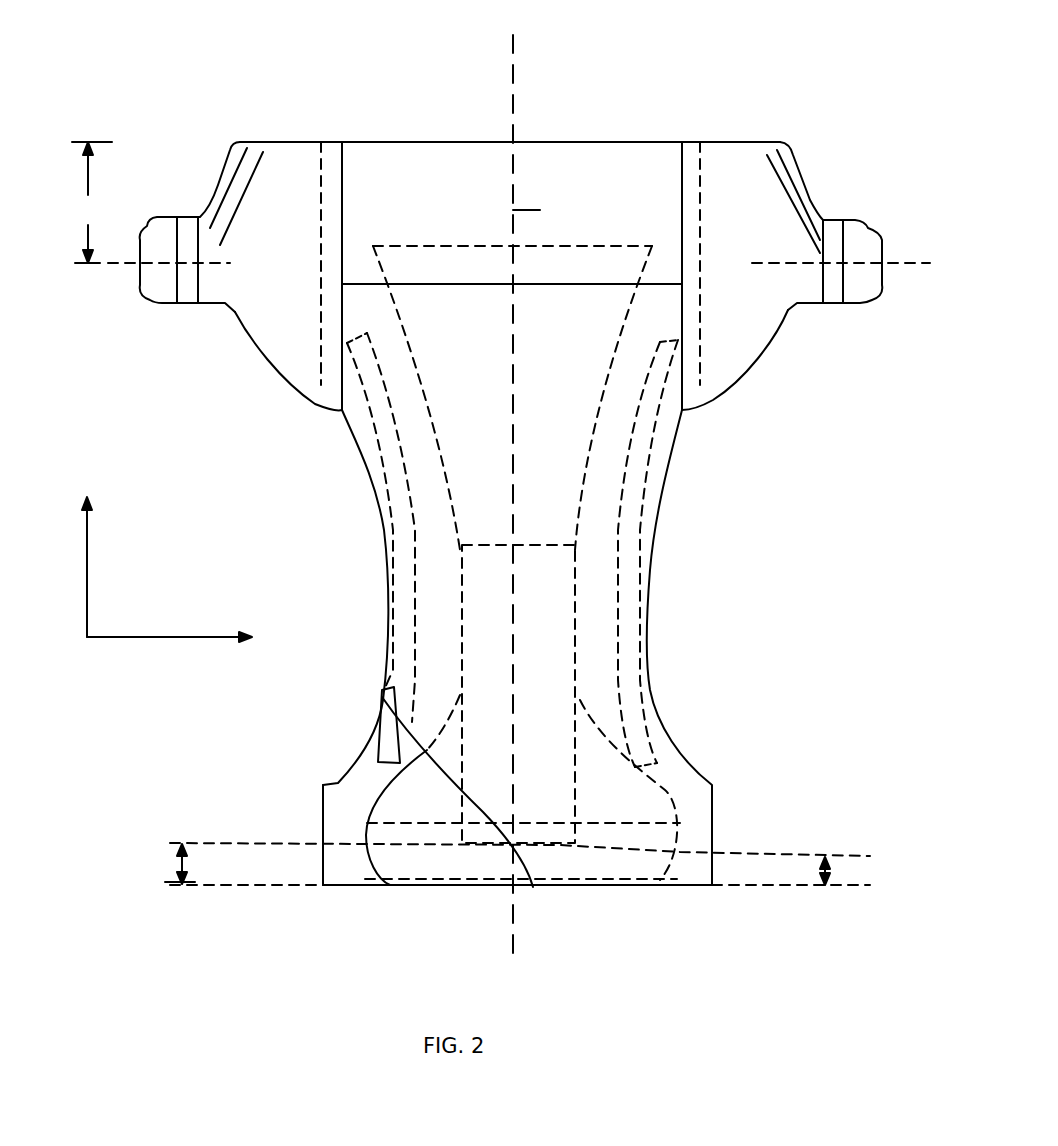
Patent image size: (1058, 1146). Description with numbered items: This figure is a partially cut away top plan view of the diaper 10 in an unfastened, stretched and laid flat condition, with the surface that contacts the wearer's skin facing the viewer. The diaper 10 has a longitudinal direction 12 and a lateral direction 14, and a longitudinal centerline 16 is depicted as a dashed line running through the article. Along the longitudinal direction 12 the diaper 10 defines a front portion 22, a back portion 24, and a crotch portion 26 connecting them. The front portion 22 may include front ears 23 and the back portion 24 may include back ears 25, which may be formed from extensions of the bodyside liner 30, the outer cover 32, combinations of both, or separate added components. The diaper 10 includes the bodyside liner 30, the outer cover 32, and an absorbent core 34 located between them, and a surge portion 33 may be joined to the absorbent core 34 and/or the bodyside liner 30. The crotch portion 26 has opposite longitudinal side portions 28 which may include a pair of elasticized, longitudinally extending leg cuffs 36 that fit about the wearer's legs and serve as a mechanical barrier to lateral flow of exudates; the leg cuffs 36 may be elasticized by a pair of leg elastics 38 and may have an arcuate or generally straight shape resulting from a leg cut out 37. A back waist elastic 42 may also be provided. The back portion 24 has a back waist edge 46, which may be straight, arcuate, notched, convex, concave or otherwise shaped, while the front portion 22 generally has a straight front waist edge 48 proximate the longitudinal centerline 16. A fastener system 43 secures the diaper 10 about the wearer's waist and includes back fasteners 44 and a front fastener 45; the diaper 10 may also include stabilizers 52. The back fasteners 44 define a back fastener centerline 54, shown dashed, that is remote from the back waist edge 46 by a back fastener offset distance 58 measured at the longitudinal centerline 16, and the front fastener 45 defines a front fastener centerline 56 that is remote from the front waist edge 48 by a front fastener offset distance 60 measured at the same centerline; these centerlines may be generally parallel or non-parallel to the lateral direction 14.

The diaper 10 is at (222, 405).
The longitudinal direction 12 is at (90, 565).
The lateral direction 14 is at (185, 648).
The longitudinal centerline 16 is at (518, 75).
The front portion 22 is at (365, 782).
The front ears 23 is at (340, 808).
The back portion 24 is at (467, 348).
The back ears 25 is at (263, 323).
The crotch portion 26 is at (387, 633).
The longitudinal side portions 28 is at (423, 513).
The bodyside liner 30 is at (528, 448).
The outer cover 32 is at (356, 880).
The surge portion 33 is at (490, 880).
The absorbent core 34 is at (428, 804).
The leg cuffs 36 is at (387, 590).
The leg cut out 37 is at (378, 678).
The leg elastics 38 is at (395, 737).
The back waist elastic 42 is at (528, 197).
The fastener system 43 is at (778, 378).
The back fasteners 44 is at (152, 275).
The front fastener 45 is at (657, 845).
The back waist edge 46 is at (440, 142).
The front waist edge 48 is at (505, 888).
The stabilizers 52 is at (265, 163).
The back fastener centerline 54 is at (85, 270).
The front fastener centerline 56 is at (230, 845).
The back fastener offset distance 58 is at (92, 202).
The front fastener offset distance 60 is at (178, 860).